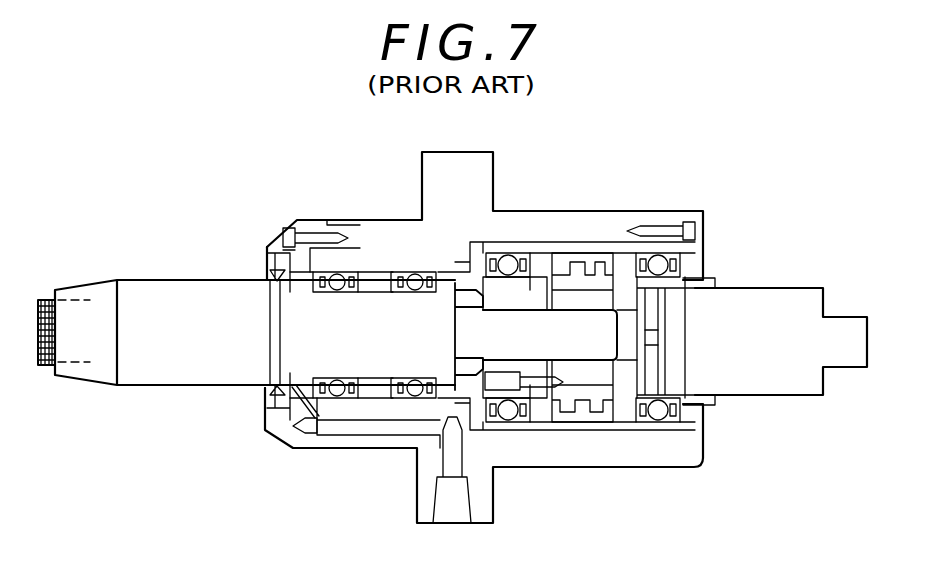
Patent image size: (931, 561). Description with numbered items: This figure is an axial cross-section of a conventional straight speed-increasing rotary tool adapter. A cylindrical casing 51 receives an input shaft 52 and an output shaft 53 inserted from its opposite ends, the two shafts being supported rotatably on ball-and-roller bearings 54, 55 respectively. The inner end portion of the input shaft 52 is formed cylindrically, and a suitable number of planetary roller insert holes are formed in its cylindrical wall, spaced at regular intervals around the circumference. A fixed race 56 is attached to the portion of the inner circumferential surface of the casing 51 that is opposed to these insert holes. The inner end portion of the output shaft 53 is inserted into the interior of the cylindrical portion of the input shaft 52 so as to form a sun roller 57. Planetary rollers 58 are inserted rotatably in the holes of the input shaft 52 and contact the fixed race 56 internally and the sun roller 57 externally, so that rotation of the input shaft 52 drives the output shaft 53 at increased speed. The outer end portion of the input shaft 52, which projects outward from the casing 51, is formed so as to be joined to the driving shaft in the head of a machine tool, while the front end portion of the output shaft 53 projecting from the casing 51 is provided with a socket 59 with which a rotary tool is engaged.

The cylindrical casing 51 is at (606, 230).
The input shaft 52 is at (755, 362).
The output shaft 53 is at (378, 337).
The ball-and-roller bearing 54 is at (508, 266).
The ball-and-roller bearing 55 is at (337, 280).
The fixed race 56 is at (575, 423).
The sun roller 57 is at (575, 340).
The planetary roller 58 is at (570, 270).
The socket 59 is at (68, 320).